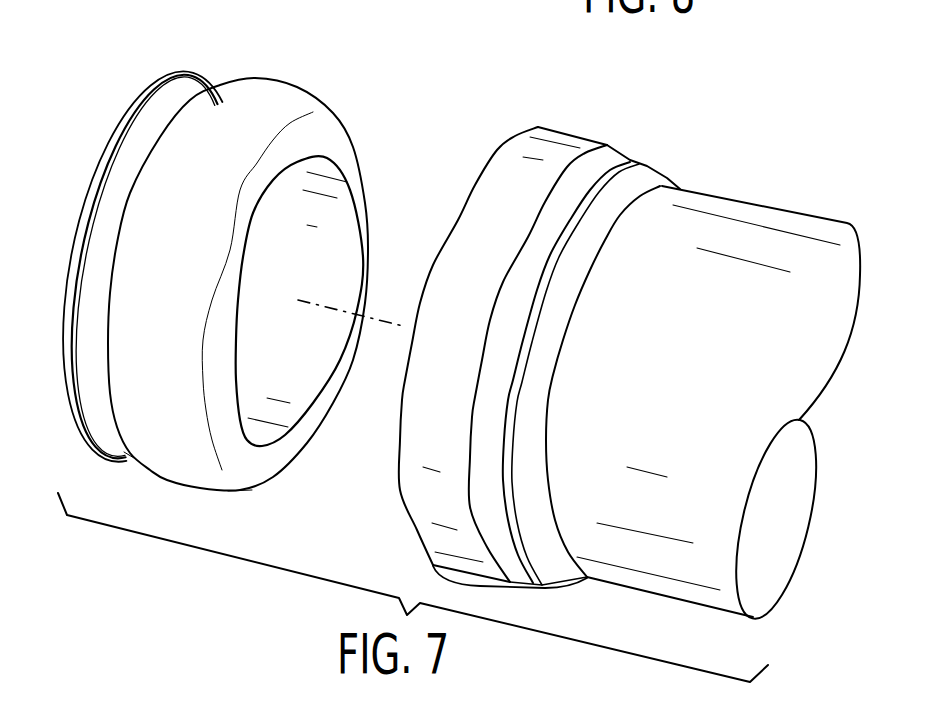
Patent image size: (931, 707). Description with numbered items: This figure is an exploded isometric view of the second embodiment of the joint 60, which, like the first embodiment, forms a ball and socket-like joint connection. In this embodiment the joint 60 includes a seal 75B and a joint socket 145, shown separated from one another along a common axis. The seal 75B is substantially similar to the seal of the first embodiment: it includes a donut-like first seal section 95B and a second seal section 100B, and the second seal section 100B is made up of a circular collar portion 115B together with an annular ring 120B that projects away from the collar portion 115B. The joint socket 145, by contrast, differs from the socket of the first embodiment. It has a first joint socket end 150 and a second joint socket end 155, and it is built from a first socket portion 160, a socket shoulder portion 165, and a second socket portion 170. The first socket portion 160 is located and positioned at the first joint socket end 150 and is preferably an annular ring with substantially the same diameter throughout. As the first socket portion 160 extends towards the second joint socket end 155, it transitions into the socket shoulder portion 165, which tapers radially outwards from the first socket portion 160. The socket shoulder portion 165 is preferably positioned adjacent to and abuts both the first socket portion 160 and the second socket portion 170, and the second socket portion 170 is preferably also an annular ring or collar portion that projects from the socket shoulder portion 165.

The joint 60 is at (638, 359).
The seal 75B is at (251, 68).
The first seal section 95B is at (240, 493).
The second seal section 100B is at (131, 470).
The collar portion 115B is at (185, 97).
The annular ring 120B is at (143, 105).
The joint socket 145 is at (637, 597).
The first joint socket end 150 is at (732, 614).
The second joint socket end 155 is at (443, 575).
The first socket portion 160 is at (768, 213).
The socket shoulder portion 165 is at (652, 168).
The second socket portion 170 is at (587, 140).